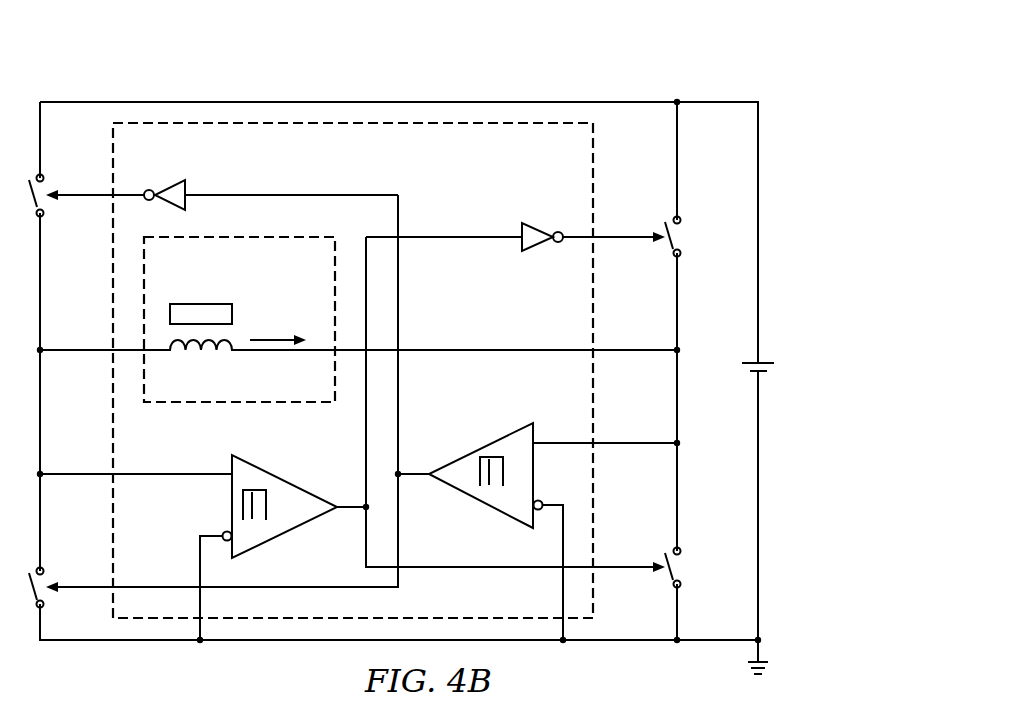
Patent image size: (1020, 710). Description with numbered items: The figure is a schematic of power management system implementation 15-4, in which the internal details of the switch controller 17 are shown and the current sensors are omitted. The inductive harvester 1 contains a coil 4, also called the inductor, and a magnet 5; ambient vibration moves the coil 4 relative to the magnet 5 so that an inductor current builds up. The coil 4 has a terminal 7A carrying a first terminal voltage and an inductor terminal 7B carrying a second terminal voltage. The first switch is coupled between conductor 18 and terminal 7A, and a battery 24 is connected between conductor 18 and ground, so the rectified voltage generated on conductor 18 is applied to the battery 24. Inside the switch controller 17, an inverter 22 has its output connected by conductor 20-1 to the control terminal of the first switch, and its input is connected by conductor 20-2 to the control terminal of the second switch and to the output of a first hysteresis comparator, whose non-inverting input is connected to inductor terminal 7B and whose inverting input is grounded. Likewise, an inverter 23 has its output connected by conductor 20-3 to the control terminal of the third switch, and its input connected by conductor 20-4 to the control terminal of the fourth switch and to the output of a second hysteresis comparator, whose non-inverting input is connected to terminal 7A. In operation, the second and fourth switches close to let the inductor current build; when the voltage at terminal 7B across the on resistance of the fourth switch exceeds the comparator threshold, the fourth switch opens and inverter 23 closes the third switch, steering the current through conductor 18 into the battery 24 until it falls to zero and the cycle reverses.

The power management system implementation 15-4 is at (583, 71).
The conductor 18 is at (278, 101).
The switch controller 17 is at (594, 161).
The inductive harvester 1 is at (197, 403).
The magnet 5 is at (185, 303).
The coil 4 is at (193, 343).
The terminal of coil 7A is at (44, 470).
The inductor terminal 7B is at (670, 438).
The battery 24 is at (741, 367).
The inverter 22 is at (150, 189).
The inverter 23 is at (536, 227).
The conductor 20-1 is at (86, 194).
The conductor 20-2 is at (411, 478).
The conductor 20-3 is at (623, 241).
The conductor 20-4 is at (362, 511).